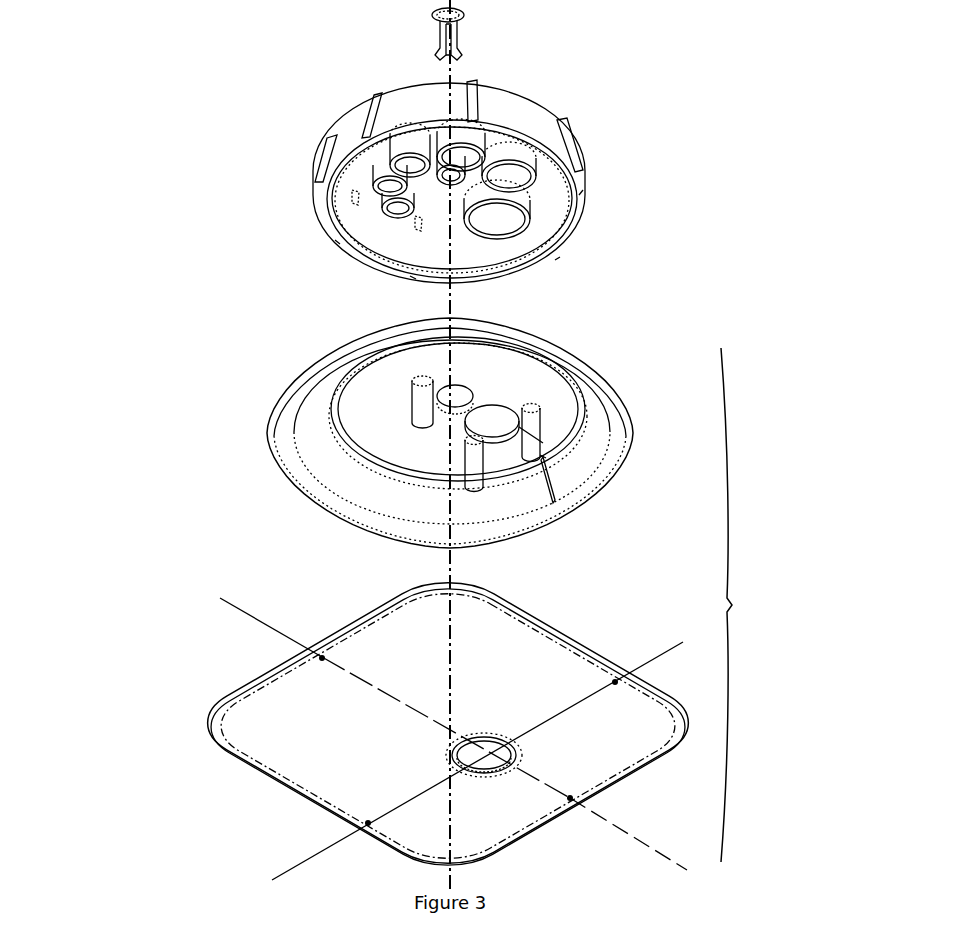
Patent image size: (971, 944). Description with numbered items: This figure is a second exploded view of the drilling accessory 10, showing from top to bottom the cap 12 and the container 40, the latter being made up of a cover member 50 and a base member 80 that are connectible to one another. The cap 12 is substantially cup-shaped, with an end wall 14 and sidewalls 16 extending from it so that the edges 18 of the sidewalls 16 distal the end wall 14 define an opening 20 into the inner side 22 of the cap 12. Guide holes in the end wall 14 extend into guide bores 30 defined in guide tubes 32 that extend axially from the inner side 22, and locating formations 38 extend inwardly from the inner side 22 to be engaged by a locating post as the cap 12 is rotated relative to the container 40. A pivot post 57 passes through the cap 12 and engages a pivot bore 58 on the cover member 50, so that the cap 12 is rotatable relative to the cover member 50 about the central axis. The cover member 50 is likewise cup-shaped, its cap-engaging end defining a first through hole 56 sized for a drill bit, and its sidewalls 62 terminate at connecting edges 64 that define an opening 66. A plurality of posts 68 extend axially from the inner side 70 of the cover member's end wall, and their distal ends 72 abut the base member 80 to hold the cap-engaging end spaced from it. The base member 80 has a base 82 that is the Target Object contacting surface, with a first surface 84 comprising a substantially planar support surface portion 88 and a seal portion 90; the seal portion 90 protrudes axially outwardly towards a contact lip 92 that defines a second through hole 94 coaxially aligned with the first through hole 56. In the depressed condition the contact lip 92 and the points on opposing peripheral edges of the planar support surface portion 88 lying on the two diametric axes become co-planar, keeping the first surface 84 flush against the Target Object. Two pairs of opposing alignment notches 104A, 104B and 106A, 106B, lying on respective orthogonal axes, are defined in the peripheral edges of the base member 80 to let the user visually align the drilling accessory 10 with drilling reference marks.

The drilling accessory 10 is at (868, 120).
The cap 12 is at (425, 197).
The end wall 14 is at (435, 205).
The sidewalls 16 is at (527, 117).
The edges 18 is at (587, 187).
The opening 20 is at (402, 237).
The inner side 22 is at (486, 257).
The guide bores 30 is at (500, 224).
The guide tubes 32 is at (538, 193).
The locating formations 38 is at (414, 220).
The container 40 is at (739, 605).
The cover member 50 is at (400, 427).
The first through hole 56 is at (495, 420).
The pivot post 57 is at (457, 30).
The pivot bore 58 is at (456, 388).
The sidewalls 62 is at (340, 348).
The connecting edges 64 is at (583, 497).
The opening 66 is at (396, 486).
The posts 68 is at (420, 410).
The inner side 70 is at (431, 459).
The distal ends 72 is at (475, 488).
The base member 80 is at (401, 738).
The base 82 is at (253, 678).
The first surface 84 is at (339, 799).
The planar support surface portion 88 is at (422, 671).
The seal portion 90 is at (520, 748).
The contact lip 92 is at (512, 760).
The second through hole 94 is at (488, 745).
The alignment notch 104A is at (603, 800).
The alignment notch 104B is at (314, 633).
The alignment notch 106A is at (357, 850).
The alignment notch 106B is at (625, 663).